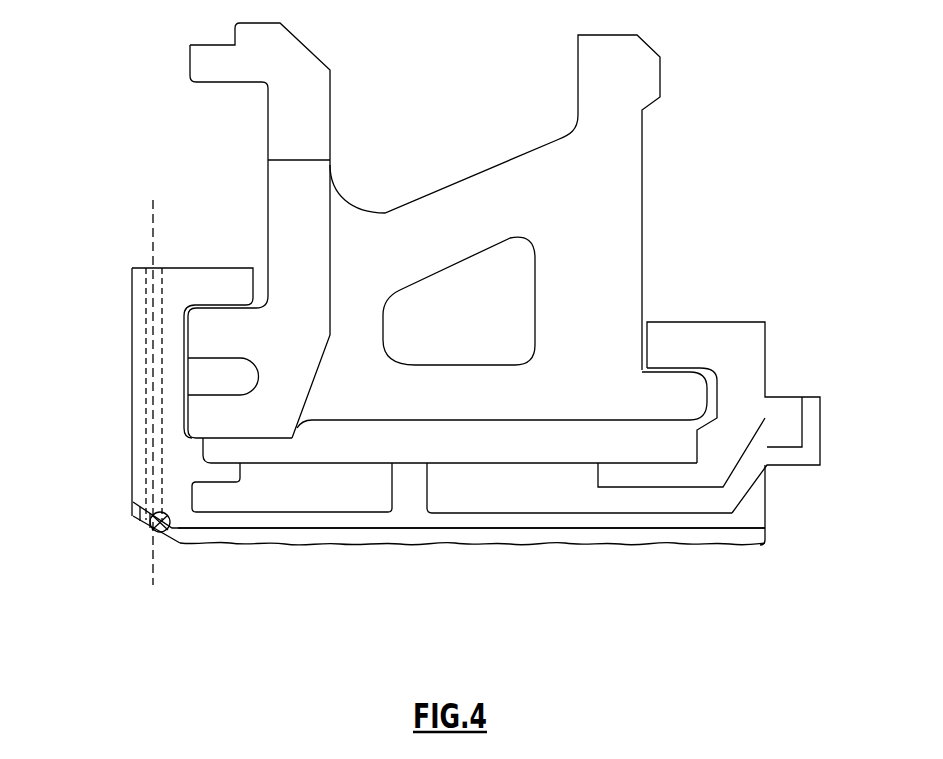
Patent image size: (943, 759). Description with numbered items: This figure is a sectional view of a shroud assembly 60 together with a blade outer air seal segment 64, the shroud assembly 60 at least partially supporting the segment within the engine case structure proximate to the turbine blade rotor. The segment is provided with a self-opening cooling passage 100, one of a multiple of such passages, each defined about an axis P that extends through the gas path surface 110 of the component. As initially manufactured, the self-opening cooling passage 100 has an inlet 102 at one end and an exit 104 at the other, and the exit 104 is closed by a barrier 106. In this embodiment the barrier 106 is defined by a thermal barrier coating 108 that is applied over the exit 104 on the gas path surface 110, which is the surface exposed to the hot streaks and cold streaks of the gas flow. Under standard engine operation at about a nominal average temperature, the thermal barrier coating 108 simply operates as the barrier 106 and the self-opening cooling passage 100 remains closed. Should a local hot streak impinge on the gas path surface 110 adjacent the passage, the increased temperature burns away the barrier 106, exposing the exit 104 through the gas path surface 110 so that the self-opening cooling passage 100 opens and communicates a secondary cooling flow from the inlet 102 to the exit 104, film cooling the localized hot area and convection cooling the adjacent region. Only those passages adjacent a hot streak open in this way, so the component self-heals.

The shroud assembly 60 is at (468, 98).
The BOAS segment 64 is at (772, 365).
The self-opening cooling passage 100 is at (165, 295).
The inlet 102 is at (152, 268).
The exit 104 is at (133, 512).
The barrier 106 is at (166, 530).
The thermal barrier coating 108 is at (462, 545).
The gas path surface 110 is at (632, 552).
The axis P is at (153, 578).